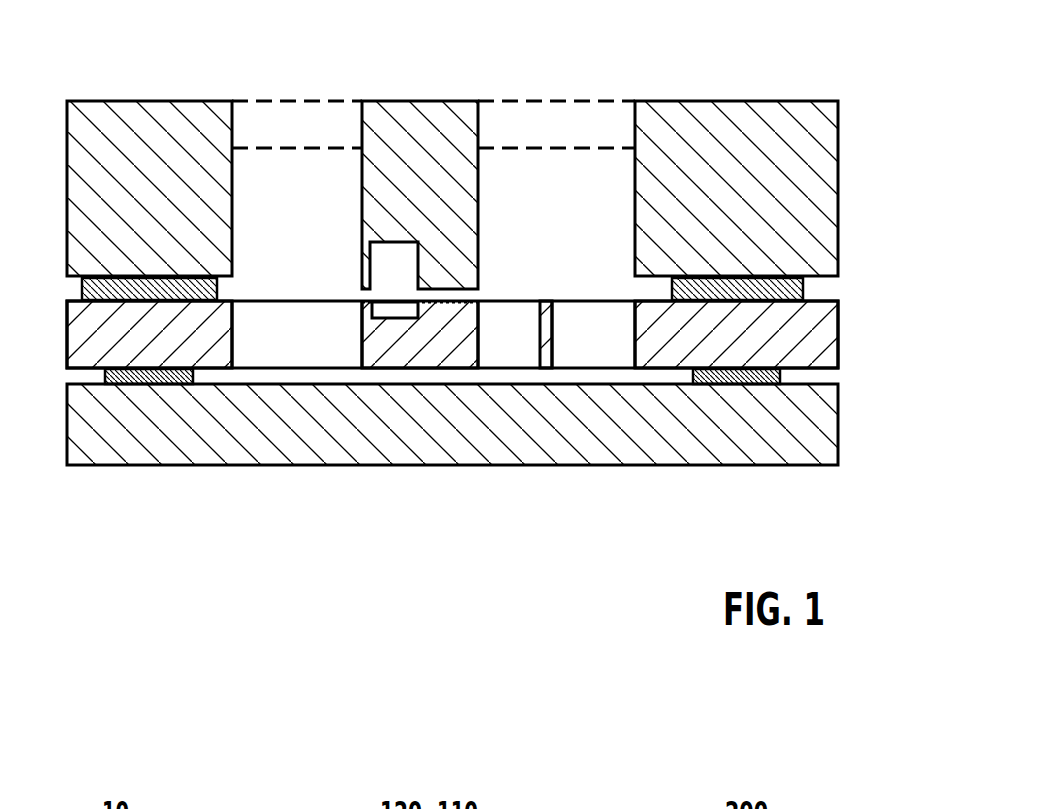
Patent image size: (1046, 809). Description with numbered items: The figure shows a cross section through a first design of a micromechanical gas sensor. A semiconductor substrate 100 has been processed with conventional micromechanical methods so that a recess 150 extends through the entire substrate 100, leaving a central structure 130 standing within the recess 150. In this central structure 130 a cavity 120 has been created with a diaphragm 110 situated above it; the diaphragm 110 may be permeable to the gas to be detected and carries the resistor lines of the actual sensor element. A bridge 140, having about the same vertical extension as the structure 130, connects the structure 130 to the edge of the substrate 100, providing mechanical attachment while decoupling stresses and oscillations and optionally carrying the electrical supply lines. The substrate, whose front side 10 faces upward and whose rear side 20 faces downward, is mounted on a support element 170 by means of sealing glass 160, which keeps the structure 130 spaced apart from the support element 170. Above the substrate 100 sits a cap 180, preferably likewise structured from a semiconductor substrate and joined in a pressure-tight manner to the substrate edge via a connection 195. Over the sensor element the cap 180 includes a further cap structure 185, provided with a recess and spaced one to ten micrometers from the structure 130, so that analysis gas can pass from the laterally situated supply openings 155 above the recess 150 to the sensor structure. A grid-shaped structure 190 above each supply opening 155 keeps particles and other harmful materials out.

The front side 10 is at (148, 79).
The rear side 20 is at (484, 474).
The semiconductor substrate 100 is at (85, 338).
The diaphragm 110 is at (462, 292).
The cavity 120 is at (380, 292).
The central structure 130 is at (415, 345).
The bridge 140 is at (547, 330).
The recess 150 is at (320, 350).
The supply opening 155 is at (320, 197).
The sealing glass 160 is at (147, 373).
The support element 170 is at (832, 420).
The cap 180 is at (78, 127).
The further cap structure 185 is at (421, 115).
The grid-shaped structure 190 is at (293, 115).
The connection 195 is at (95, 292).